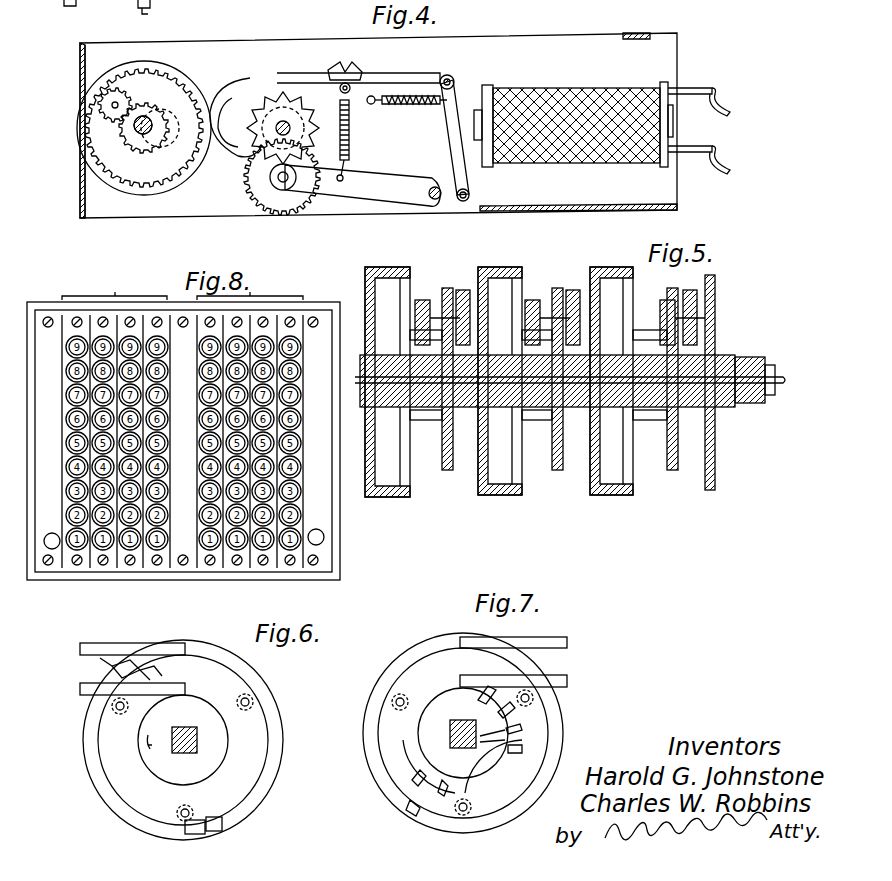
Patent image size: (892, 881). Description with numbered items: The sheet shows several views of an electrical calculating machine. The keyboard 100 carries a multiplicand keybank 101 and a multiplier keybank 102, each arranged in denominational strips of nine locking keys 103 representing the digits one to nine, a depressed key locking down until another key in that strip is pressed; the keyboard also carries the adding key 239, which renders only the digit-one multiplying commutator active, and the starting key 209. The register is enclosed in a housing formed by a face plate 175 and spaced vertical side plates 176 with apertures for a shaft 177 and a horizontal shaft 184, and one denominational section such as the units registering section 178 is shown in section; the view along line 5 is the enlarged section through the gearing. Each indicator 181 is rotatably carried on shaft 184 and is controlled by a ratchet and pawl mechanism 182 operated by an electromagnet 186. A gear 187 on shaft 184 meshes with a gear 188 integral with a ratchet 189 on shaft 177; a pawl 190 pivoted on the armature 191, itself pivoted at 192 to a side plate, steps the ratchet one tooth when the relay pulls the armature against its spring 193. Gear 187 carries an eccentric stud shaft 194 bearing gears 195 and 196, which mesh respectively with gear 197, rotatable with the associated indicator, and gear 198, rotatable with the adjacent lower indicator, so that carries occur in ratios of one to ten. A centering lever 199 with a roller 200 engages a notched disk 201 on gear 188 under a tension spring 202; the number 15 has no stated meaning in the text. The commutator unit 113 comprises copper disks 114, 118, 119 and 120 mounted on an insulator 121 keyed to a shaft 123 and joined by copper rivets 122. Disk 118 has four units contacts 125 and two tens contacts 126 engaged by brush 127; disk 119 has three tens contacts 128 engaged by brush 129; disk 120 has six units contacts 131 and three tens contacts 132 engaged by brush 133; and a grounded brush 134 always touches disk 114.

In FIG. 4, the section line 5 is at (84, 78).
In FIG. 4, the drum shaft 15 is at (216, 196).
In FIG. 8, the keyboard 100 is at (30, 302).
In FIG. 8, the multiplicand keybank 101 is at (250, 410).
In FIG. 8, the multiplier keybank 102 is at (115, 411).
In FIG. 8, the keys 103 is at (285, 548).
In FIG. 6, the unit of three contact disks 113 is at (291, 712).
In FIG. 7, the unit of three contact disks 113 is at (358, 708).
In FIG. 6, the ground disk 114 is at (225, 700).
In FIG. 6, the contact disk 118 is at (220, 680).
In FIG. 7, the contact disk 119 is at (488, 808).
In FIG. 7, the contact disk 120 is at (495, 752).
In FIG. 6, the insulator 121 is at (235, 752).
In FIG. 7, the insulator 121 is at (540, 730).
In FIG. 6, the copper rivets 122 is at (250, 706).
In FIG. 7, the copper rivets 122 is at (530, 704).
In FIG. 6, the shaft 123 is at (190, 754).
In FIG. 7, the shaft 123 is at (435, 750).
In FIG. 6, the radial contacts 125 is at (105, 680).
In FIG. 6, the radial contacts 126 is at (200, 835).
In FIG. 6, the brush 127 is at (108, 650).
In FIG. 7, the radial contacts 128 is at (415, 815).
In FIG. 7, the brush 129 is at (560, 637).
In FIG. 7, the radial contacts 131 is at (476, 720).
In FIG. 7, the radial contacts 132 is at (450, 796).
In FIG. 7, the brush 133 is at (565, 675).
In FIG. 6, the ground brush 134 is at (80, 690).
In FIG. 4, the face plate 175 is at (58, 12).
In FIG. 4, the vertical side plates 176 is at (555, 45).
In FIG. 4, the shaft 177 is at (258, 160).
In FIG. 4, the units registering section 178 is at (692, 82).
In FIG. 4, the indicator 181 is at (100, 183).
In FIG. 5, the indicator 181 is at (500, 495).
In FIG. 4, the ratchet and pawl mechanism 182 is at (258, 82).
In FIG. 4, the horizontal shaft 184 is at (175, 85).
In FIG. 5, the horizontal shaft 184 is at (772, 385).
In FIG. 4, the electromagnet 186 is at (595, 160).
In FIG. 4, the gear 187 is at (130, 195).
In FIG. 5, the gear 187 is at (445, 475).
In FIG. 4, the gear 188 is at (322, 200).
In FIG. 4, the ratchet 189 is at (295, 62).
In FIG. 4, the pawl 190 is at (395, 80).
In FIG. 4, the armature 191 is at (455, 118).
In FIG. 4, the pivot 192 is at (470, 195).
In FIG. 4, the spring 193 is at (415, 108).
In FIG. 4, the stud shaft 194 is at (112, 105).
In FIG. 5, the stud shaft 194 is at (428, 305).
In FIG. 4, the gear 195 is at (108, 72).
In FIG. 5, the gear 195 is at (528, 310).
In FIG. 4, the gear 196 is at (128, 118).
In FIG. 5, the gear 196 is at (597, 300).
In FIG. 4, the gear 197 is at (120, 148).
In FIG. 5, the gear 197 is at (530, 420).
In FIG. 4, the gear 198 is at (150, 122).
In FIG. 5, the gear 198 is at (476, 408).
In FIG. 4, the lever 199 is at (370, 200).
In FIG. 4, the roller 200 is at (285, 190).
In FIG. 4, the notched disk 201 is at (349, 152).
In FIG. 4, the tension spring 202 is at (345, 146).
In FIG. 8, the starting key 209 is at (322, 545).
In FIG. 8, the adding key 239 is at (48, 550).